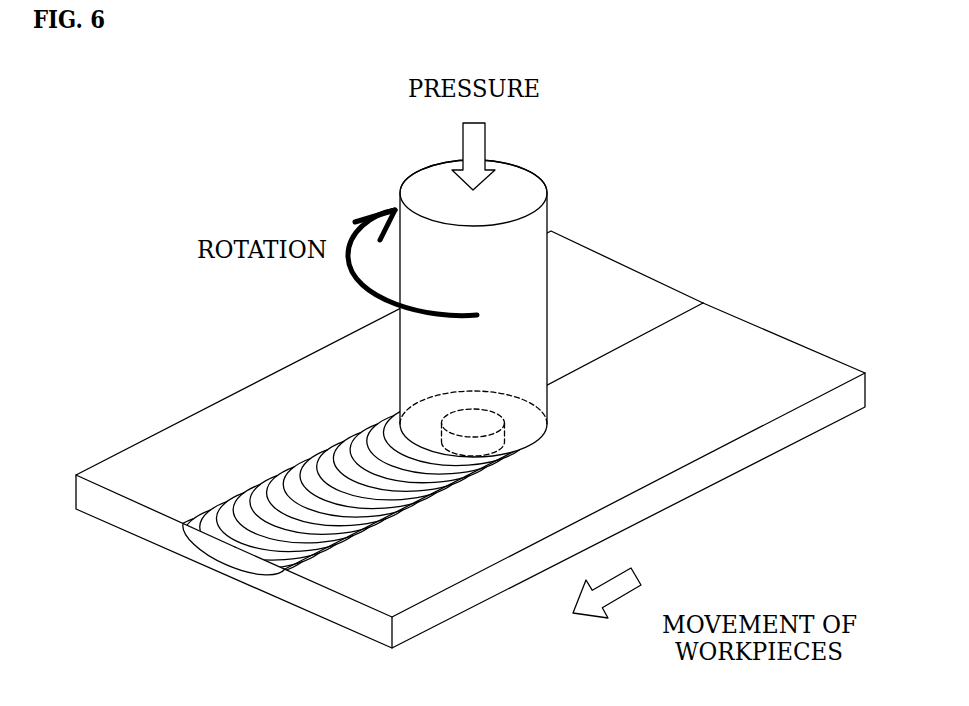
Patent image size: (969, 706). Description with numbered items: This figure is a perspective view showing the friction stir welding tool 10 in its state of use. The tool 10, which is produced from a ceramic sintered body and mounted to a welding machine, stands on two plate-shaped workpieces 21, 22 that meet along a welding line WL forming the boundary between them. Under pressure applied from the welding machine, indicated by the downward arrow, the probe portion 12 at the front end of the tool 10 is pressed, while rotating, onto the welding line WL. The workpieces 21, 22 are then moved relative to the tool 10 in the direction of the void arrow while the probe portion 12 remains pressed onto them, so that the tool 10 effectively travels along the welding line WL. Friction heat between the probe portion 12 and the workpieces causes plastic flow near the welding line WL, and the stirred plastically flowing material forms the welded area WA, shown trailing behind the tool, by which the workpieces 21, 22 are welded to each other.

The friction stir welding tool 10 is at (557, 142).
The probe portion 12 is at (475, 423).
The workpiece 21 is at (605, 275).
The workpiece 22 is at (757, 343).
The welding line WL is at (705, 302).
The welded area WA is at (227, 555).